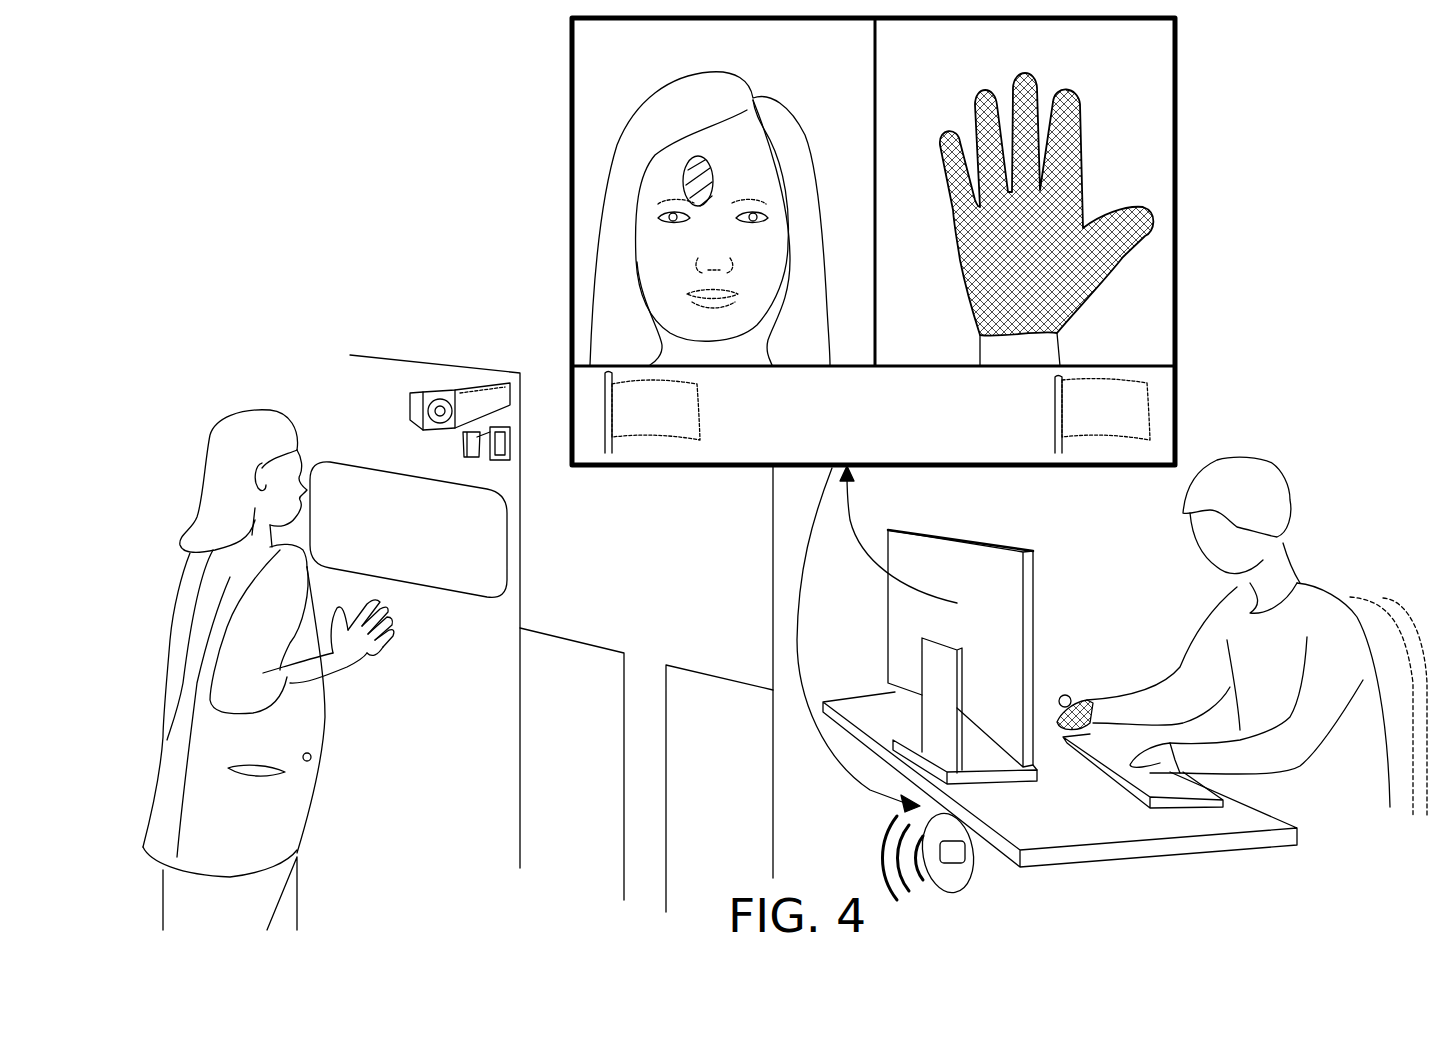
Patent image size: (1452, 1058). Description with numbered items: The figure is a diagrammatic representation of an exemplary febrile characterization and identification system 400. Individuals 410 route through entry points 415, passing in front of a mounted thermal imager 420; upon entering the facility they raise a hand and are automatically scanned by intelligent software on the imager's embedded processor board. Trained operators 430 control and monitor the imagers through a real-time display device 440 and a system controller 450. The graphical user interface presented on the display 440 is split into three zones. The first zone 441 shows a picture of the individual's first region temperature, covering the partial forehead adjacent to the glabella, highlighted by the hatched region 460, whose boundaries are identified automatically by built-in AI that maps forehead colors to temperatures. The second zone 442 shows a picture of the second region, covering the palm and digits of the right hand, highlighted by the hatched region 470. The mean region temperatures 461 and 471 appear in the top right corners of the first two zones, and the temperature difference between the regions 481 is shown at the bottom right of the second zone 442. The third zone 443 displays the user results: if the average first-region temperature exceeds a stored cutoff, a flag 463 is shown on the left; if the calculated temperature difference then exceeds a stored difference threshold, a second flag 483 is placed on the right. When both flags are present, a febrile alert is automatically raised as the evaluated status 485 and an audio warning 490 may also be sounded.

The system 400 is at (785, 474).
The individuals 410 is at (303, 850).
The entry points 415 is at (718, 677).
The thermal imager 420 is at (407, 391).
The operators 430 is at (1200, 613).
The display device 440 is at (1176, 38).
The zone 1 441 is at (672, 195).
The zone 2 442 is at (1077, 195).
The zone 3 443 is at (945, 436).
The system controller 450 is at (1100, 755).
The hatched region 460 is at (703, 183).
The mean region temperature 461 is at (758, 50).
The flag 463 is at (658, 446).
The hatched region 470 is at (975, 214).
The mean region temperature 471 is at (1053, 50).
The temperature difference 481 is at (1113, 327).
The second flag 483 is at (1150, 395).
The evaluated status 485 is at (893, 462).
The audio warning 490 is at (967, 877).